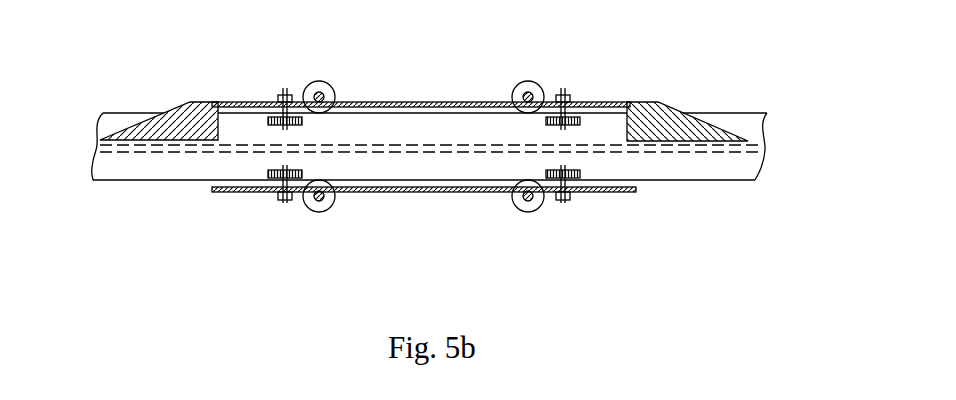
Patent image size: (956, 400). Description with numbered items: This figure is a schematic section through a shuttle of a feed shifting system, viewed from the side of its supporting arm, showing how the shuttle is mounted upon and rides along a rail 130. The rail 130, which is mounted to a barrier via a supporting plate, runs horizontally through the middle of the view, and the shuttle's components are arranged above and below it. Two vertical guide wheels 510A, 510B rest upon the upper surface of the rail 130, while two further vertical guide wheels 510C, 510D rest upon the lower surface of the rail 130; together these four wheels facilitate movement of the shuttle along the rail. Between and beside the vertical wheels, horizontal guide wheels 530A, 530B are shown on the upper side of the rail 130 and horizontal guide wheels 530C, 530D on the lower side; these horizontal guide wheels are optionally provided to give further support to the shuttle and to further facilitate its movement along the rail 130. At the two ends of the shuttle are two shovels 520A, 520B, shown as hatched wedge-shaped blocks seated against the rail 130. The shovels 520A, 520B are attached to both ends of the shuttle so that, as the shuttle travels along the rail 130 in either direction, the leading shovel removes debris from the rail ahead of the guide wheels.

The rail 130 is at (127, 180).
The shovel 520A is at (148, 107).
The shovel 520B is at (652, 102).
The vertical guide wheel 510A is at (336, 86).
The vertical guide wheel 510B is at (512, 94).
The vertical guide wheel 510C is at (340, 204).
The vertical guide wheel 510D is at (507, 205).
The horizontal guide wheel 530A is at (270, 106).
The horizontal guide wheel 530B is at (580, 102).
The horizontal guide wheel 530C is at (268, 193).
The horizontal guide wheel 530D is at (578, 182).